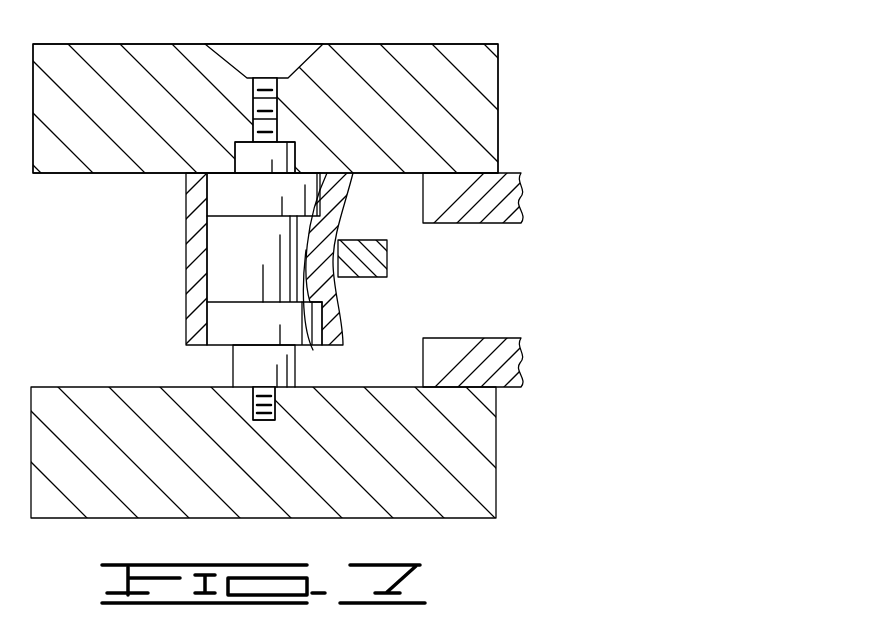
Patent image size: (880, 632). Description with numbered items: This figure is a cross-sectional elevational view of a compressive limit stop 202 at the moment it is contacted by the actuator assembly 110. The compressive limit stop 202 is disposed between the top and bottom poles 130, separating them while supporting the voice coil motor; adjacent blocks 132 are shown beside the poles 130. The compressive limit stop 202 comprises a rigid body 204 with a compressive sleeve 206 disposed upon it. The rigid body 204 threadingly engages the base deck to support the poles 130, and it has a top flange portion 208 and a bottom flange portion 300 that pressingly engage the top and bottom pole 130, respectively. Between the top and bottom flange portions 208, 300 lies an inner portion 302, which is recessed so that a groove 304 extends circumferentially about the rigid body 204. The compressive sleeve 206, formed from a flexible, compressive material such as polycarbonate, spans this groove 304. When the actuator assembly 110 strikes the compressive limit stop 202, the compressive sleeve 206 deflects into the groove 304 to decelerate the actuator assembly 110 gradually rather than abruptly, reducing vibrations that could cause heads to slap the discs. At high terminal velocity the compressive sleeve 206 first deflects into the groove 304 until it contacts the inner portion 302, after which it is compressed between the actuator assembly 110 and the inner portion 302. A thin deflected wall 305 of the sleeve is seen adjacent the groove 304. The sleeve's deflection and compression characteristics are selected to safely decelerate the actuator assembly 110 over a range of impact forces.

The pole 130 is at (473, 95).
The spacer block 132 is at (497, 195).
The actuator assembly 110 is at (398, 262).
The compressive limit stop 202 is at (242, 284).
The rigid body 204 is at (252, 246).
The compressive sleeve 206 is at (192, 220).
The top flange portion 208 is at (225, 190).
The bottom flange portion 300 is at (228, 323).
The inner portion 302 is at (226, 279).
The groove 304 is at (321, 289).
The thin flexible wall 305 is at (313, 350).